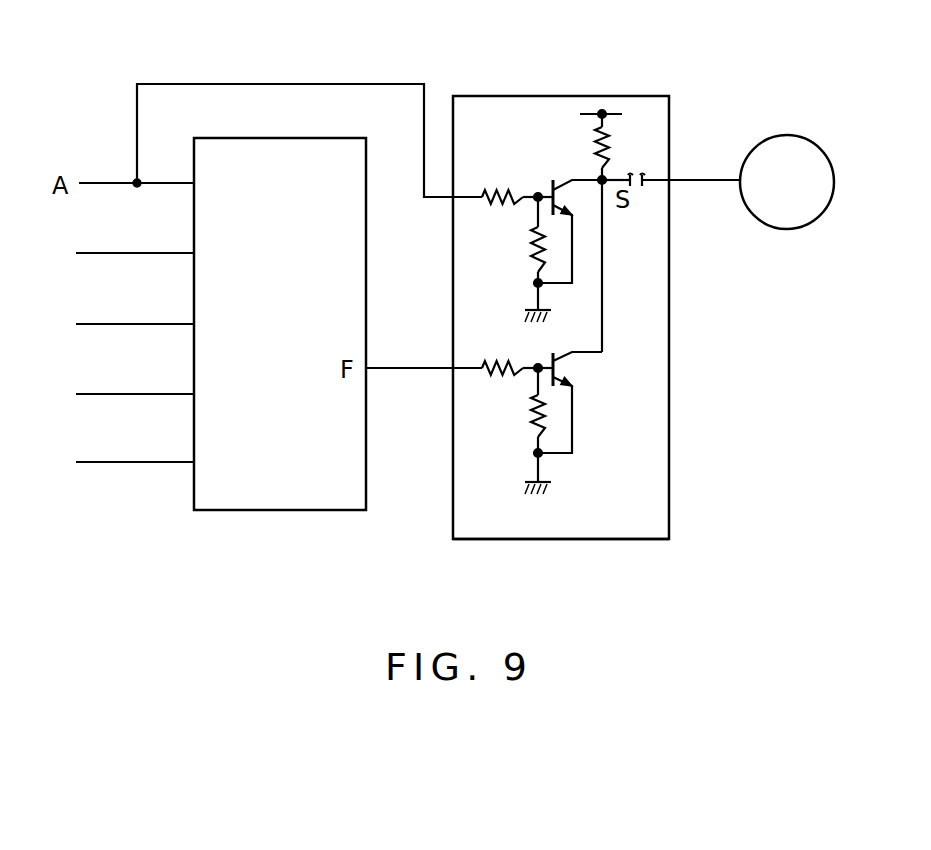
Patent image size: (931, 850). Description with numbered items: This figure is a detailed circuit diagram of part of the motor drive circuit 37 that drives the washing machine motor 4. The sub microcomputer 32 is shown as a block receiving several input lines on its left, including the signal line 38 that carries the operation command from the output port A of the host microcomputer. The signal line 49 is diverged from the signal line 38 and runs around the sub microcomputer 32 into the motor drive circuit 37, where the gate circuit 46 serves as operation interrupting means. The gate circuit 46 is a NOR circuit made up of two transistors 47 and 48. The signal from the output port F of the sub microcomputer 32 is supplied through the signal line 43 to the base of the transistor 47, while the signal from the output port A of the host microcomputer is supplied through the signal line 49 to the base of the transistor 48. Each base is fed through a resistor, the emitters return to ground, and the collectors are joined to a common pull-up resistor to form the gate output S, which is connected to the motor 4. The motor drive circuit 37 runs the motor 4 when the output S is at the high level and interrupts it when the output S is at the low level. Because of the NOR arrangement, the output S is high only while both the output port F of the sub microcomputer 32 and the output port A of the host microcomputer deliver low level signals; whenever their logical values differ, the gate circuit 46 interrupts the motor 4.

The motor 4 is at (791, 229).
The sub microcomputer 32 is at (305, 511).
The motor drive circuit 37 is at (569, 540).
The signal line 38 is at (162, 184).
The signal line 43 is at (402, 370).
The gate circuit 46 is at (523, 117).
The transistor 47 is at (572, 367).
The transistor 48 is at (568, 198).
The signal line 49 is at (268, 84).